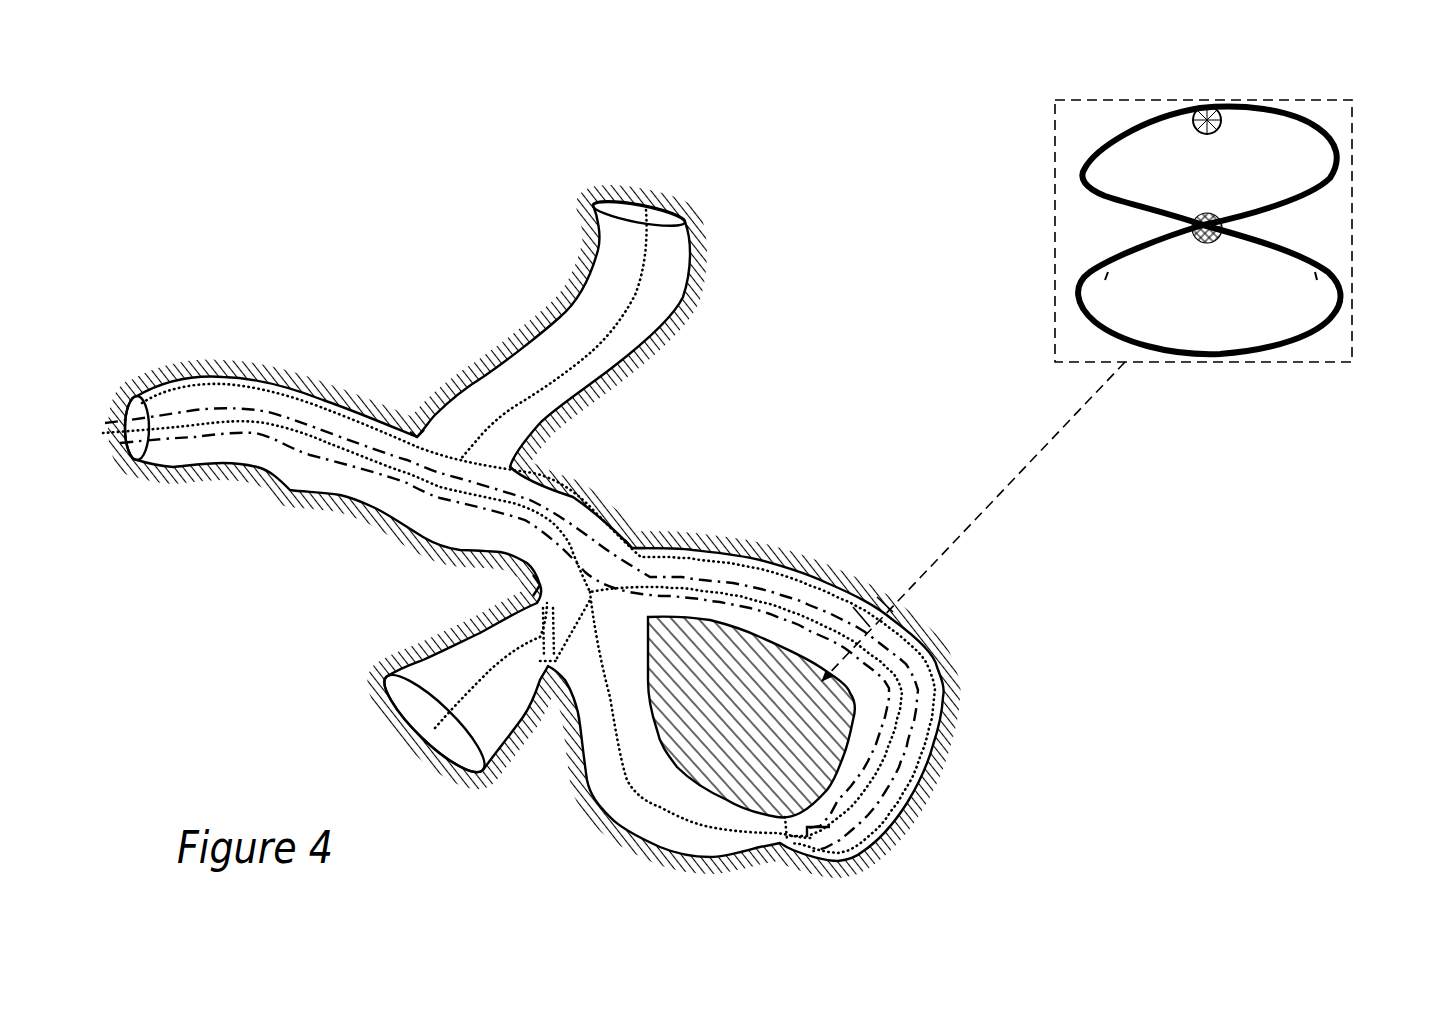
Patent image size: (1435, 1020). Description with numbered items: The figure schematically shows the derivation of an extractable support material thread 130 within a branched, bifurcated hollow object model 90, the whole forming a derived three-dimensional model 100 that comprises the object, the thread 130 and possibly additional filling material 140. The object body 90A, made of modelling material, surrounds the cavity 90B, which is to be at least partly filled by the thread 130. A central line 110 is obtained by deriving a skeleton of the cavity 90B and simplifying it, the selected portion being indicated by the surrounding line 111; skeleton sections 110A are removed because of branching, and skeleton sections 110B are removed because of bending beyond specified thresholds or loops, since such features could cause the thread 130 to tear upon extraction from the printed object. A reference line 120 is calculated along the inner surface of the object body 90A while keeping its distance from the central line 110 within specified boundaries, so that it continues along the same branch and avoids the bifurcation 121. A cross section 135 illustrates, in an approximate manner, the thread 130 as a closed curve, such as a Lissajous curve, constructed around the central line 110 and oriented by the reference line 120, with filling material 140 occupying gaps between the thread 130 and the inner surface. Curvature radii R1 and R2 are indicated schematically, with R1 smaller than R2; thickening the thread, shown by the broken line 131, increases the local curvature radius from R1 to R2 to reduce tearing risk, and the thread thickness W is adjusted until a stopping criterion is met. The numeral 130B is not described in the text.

The derived 3D model 100 is at (213, 186).
The hollow 3D object model 90 is at (196, 547).
The object body 90A is at (172, 460).
The cavity 90B is at (182, 455).
The central line 110 is at (232, 428).
The line surrounding the selected portion 111 is at (290, 442).
The skeleton section (branching) 110A is at (610, 327).
The skeleton section (bending or loop) 110B is at (667, 810).
The reference line 120 is at (307, 402).
The bifurcation 121 is at (418, 434).
The support material thread 130 is at (1158, 108).
The implant end 130B is at (93, 407).
The broken line (thickened thread) 131 is at (1093, 307).
The cross section 135 is at (873, 598).
The filling material 140 is at (1290, 172).
The thread thickness W is at (1085, 278).
The first curvature radius R1 is at (1089, 288).
The second curvature radius R2 is at (1105, 295).